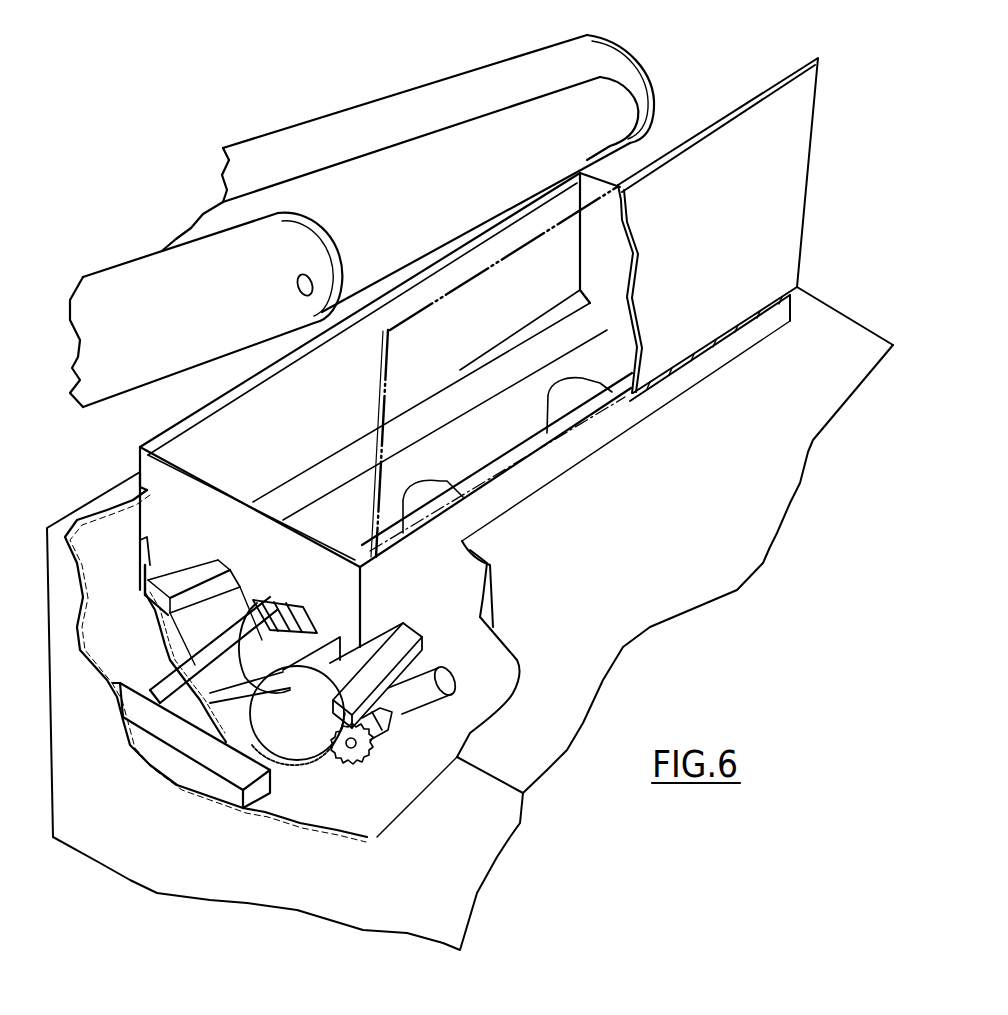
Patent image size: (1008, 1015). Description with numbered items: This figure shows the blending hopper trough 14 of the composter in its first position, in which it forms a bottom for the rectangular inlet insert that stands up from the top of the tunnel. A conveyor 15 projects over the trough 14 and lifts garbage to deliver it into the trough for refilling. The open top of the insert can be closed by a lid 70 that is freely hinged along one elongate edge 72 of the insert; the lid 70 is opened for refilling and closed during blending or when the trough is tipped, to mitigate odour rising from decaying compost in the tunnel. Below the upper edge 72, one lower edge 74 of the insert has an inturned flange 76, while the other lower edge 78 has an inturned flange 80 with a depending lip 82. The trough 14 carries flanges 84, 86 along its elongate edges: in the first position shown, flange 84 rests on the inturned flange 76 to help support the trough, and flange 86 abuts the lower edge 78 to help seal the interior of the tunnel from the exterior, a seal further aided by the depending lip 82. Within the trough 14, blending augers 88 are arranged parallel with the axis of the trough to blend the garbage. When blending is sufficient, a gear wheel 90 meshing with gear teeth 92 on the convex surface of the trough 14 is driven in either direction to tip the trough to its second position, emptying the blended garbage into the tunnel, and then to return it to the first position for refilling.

The blending hopper trough 14 is at (162, 480).
The conveyor 15 is at (340, 187).
The lid 70 is at (798, 196).
The elongate edge 72 is at (710, 347).
The lower edge 74 is at (463, 633).
The inturned flange 76 is at (363, 703).
The lower edge 78 is at (140, 557).
The inturned flange 80 is at (187, 570).
The depending lip 82 is at (208, 578).
The flange 84 is at (390, 667).
The flange 86 is at (140, 594).
The blending augers 88 is at (310, 678).
The gear wheel 90 is at (380, 747).
The gear teeth 92 is at (323, 763).